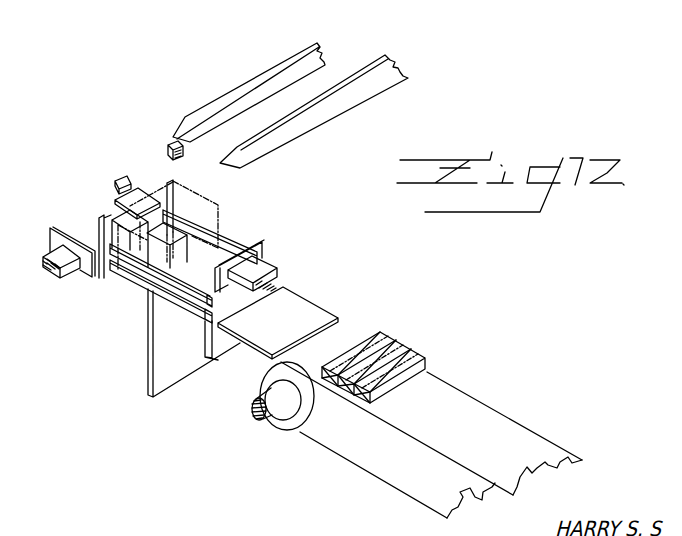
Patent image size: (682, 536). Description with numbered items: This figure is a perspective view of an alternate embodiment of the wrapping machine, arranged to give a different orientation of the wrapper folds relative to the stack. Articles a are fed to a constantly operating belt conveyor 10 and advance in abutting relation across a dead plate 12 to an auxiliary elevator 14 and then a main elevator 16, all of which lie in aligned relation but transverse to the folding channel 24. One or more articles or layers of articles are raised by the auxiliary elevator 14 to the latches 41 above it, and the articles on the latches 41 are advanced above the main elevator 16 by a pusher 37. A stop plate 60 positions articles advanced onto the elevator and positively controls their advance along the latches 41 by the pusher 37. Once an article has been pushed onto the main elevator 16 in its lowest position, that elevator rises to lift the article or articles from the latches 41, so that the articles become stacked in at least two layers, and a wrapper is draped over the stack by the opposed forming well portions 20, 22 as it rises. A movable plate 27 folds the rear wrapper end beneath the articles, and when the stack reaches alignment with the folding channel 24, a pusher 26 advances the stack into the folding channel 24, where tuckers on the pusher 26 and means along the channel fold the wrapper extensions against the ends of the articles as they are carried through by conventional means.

The belt conveyor 10 is at (507, 415).
The dead plate 12 is at (317, 303).
The auxiliary elevator 14 is at (197, 315).
The main elevator 16 is at (127, 273).
The forming well portion 20 is at (122, 178).
The forming well portion 22 is at (172, 140).
The folding channel 24 is at (228, 78).
The pusher 26 is at (66, 226).
The movable plate 27 is at (117, 200).
The pusher 37 is at (277, 270).
The latches 41 is at (232, 238).
The stop plate 60 is at (102, 278).
The articles a is at (427, 350).